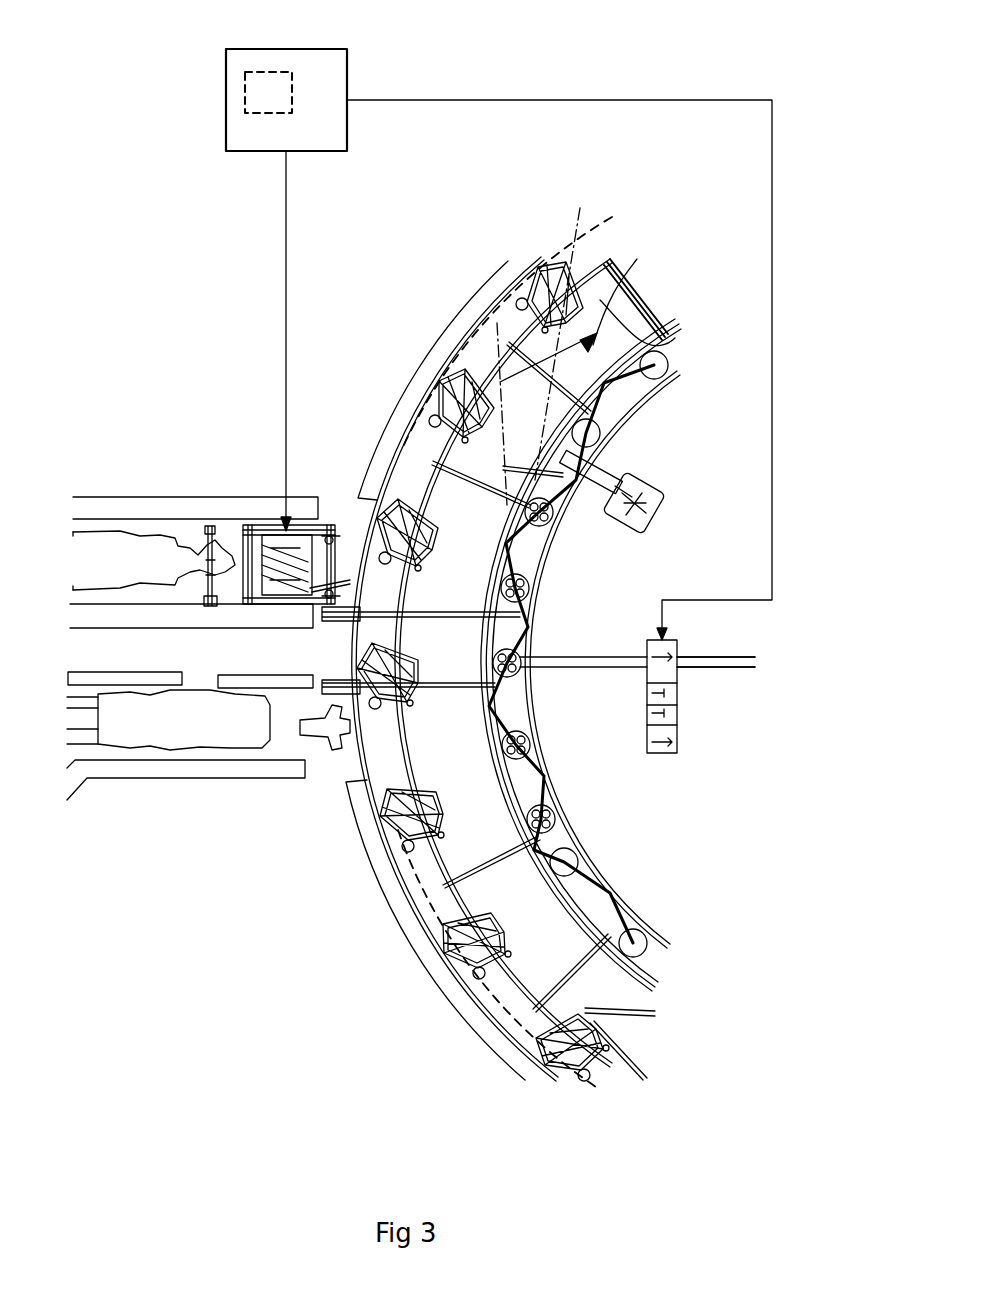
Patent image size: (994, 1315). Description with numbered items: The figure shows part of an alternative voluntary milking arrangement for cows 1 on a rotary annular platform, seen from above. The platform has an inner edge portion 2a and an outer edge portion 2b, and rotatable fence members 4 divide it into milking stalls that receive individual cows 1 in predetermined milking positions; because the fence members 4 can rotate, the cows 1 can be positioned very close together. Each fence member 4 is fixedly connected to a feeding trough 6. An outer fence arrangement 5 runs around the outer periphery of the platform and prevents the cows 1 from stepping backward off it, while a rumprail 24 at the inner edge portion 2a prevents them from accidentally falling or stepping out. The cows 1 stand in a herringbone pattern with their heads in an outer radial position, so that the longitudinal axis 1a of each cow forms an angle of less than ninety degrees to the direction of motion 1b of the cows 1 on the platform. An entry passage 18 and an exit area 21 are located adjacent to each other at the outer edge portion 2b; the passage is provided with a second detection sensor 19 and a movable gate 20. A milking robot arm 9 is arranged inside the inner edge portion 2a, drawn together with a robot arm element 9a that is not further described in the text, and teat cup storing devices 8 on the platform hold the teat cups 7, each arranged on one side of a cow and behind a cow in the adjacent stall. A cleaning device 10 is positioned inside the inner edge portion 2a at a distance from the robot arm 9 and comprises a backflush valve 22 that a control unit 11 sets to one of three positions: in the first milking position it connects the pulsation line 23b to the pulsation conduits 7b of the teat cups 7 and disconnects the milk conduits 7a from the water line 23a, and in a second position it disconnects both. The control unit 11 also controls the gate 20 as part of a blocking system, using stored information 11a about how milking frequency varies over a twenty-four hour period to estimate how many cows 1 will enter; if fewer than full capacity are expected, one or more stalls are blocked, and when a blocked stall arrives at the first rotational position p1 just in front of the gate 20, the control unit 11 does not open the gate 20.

The cow 1 is at (163, 553).
The longitudinal axis of the cow 1a is at (583, 240).
The direction of motion of the cows 1b is at (600, 357).
The inner edge portion of the platform 2a is at (575, 838).
The outer edge portion of the platform 2b is at (395, 878).
The rotatable fence member 4 is at (358, 577).
The outer fence arrangement 5 is at (465, 990).
The feeding trough 6 is at (417, 530).
The teat cup 7 is at (556, 828).
The milk conduit 7a is at (600, 668).
The pulsation conduit 7b is at (573, 657).
The teat cup storing device 8 is at (530, 745).
The milking robot arm 9 is at (590, 470).
The actuator 9a is at (644, 508).
The cleaning device 10 is at (690, 707).
The control unit 11 is at (333, 73).
The stored information 11a is at (268, 87).
The entry passage 18 is at (180, 588).
The second detection sensor 19 is at (210, 553).
The movable gate 20 is at (273, 523).
The exit area 21 is at (287, 740).
The backflush valve 22 is at (522, 665).
The water line 23a is at (735, 670).
The pulsation line 23b is at (727, 656).
The rumprail 24 is at (560, 472).
The first rotational position p1 is at (453, 520).